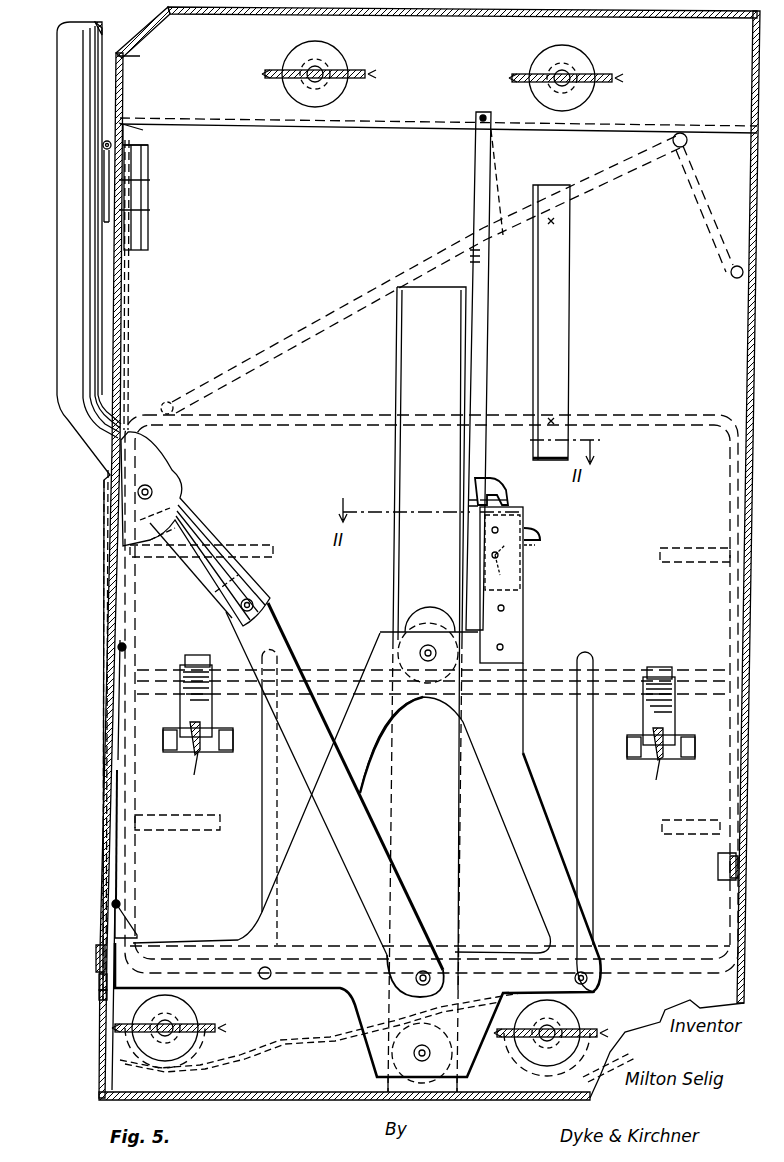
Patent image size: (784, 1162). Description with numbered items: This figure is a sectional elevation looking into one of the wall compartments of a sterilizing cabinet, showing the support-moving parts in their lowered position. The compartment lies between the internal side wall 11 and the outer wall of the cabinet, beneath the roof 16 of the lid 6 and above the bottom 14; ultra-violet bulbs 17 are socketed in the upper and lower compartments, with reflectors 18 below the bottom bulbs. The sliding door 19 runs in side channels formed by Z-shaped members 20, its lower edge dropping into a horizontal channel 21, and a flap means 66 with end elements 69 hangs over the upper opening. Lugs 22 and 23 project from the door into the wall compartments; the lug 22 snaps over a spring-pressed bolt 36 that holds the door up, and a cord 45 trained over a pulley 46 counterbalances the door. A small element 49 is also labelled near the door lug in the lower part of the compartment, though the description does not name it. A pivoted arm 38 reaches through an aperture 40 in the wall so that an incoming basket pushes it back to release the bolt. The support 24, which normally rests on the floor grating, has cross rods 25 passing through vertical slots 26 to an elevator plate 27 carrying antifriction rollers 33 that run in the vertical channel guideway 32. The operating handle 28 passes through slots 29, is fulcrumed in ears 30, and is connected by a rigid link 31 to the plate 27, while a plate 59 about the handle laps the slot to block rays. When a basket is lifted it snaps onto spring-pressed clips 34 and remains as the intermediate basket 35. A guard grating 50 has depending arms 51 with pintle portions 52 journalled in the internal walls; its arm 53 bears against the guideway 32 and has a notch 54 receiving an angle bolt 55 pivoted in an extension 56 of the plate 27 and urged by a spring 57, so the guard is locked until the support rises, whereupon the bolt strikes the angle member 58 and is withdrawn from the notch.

The top cover or lid 6 is at (160, 24).
The roof 16 is at (263, 11).
The slots 29 is at (112, 574).
The flap means 66 is at (751, 336).
The bottom 14 is at (317, 1091).
The lug 23 is at (665, 975).
The operating handle 28 is at (70, 84).
The plate 59 is at (124, 377).
The end elements 69 is at (108, 201).
The pulley 46 is at (130, 227).
The intermediate basket 35 is at (655, 419).
The support 24 is at (648, 960).
The ultra-violet bulbs 17 is at (338, 63).
The vertical channel guideway 32 is at (405, 386).
The arm 53 is at (481, 312).
The grating guard 50 is at (312, 326).
The depending arms 51 is at (706, 205).
The pintle portions 52 is at (731, 273).
The angle member 58 is at (563, 282).
The notch 54 is at (490, 476).
The angle bolt 55 is at (499, 486).
The extension 56 is at (523, 571).
The spring 57 is at (527, 549).
The ears 30 is at (185, 477).
The rigid link 31 is at (291, 651).
The elevator plate 27 is at (548, 907).
The antifriction rollers 33 is at (433, 626).
The vertical slots 26 is at (264, 780).
The cross rods 25 is at (268, 969).
The clips 34 is at (201, 660).
The bolt 36 is at (130, 650).
The cord 45 is at (122, 802).
The internal side wall 11 is at (148, 864).
The door 19 is at (113, 904).
The lug 22 is at (125, 932).
The plate 49 is at (122, 968).
The Z-shaped members 20 is at (98, 950).
The channel 21 is at (101, 985).
The aperture 40 is at (718, 866).
The arm 38 is at (735, 873).
The reflectors 18 is at (306, 1046).